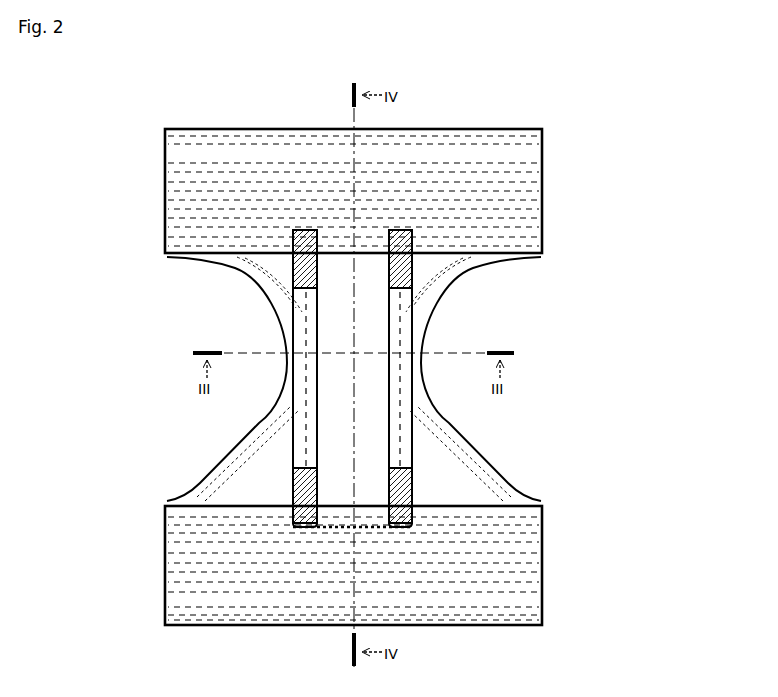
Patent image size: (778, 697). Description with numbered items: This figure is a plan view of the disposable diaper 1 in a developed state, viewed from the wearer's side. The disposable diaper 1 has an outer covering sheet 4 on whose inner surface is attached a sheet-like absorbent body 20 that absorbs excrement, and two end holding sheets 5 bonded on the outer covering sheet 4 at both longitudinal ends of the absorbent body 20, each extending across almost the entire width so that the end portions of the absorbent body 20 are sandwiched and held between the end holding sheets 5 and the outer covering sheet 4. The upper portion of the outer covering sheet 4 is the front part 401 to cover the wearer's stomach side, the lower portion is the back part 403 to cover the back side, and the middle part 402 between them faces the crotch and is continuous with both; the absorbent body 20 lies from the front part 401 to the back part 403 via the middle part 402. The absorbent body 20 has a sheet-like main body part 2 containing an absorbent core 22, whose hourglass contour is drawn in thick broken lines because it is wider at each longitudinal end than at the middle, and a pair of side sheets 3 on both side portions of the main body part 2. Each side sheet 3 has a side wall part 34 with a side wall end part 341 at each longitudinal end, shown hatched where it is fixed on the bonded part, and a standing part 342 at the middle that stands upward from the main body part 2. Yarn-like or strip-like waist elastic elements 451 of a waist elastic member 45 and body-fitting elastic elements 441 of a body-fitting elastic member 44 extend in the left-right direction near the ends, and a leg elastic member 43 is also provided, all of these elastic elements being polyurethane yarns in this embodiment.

The disposable diaper 1 is at (166, 92).
The main body part 2 is at (536, 325).
The absorbent body 20 is at (608, 312).
The absorbent core 22 is at (416, 350).
The side sheet 3 is at (105, 386).
The side wall part 34 is at (142, 443).
The side wall end part 341 is at (291, 262).
The standing part 342 is at (300, 408).
The outer covering sheet 4 is at (237, 262).
The front part 401 is at (213, 197).
The middle part 402 is at (340, 366).
The back part 403 is at (222, 564).
The leg elastic member 43 is at (466, 264).
The body-fitting elastic member 44 is at (607, 168).
The body-fitting elastic element 441 is at (495, 172).
The waist elastic member 45 is at (578, 104).
The waist elastic element 451 is at (500, 128).
The end holding sheet 5 is at (190, 229).